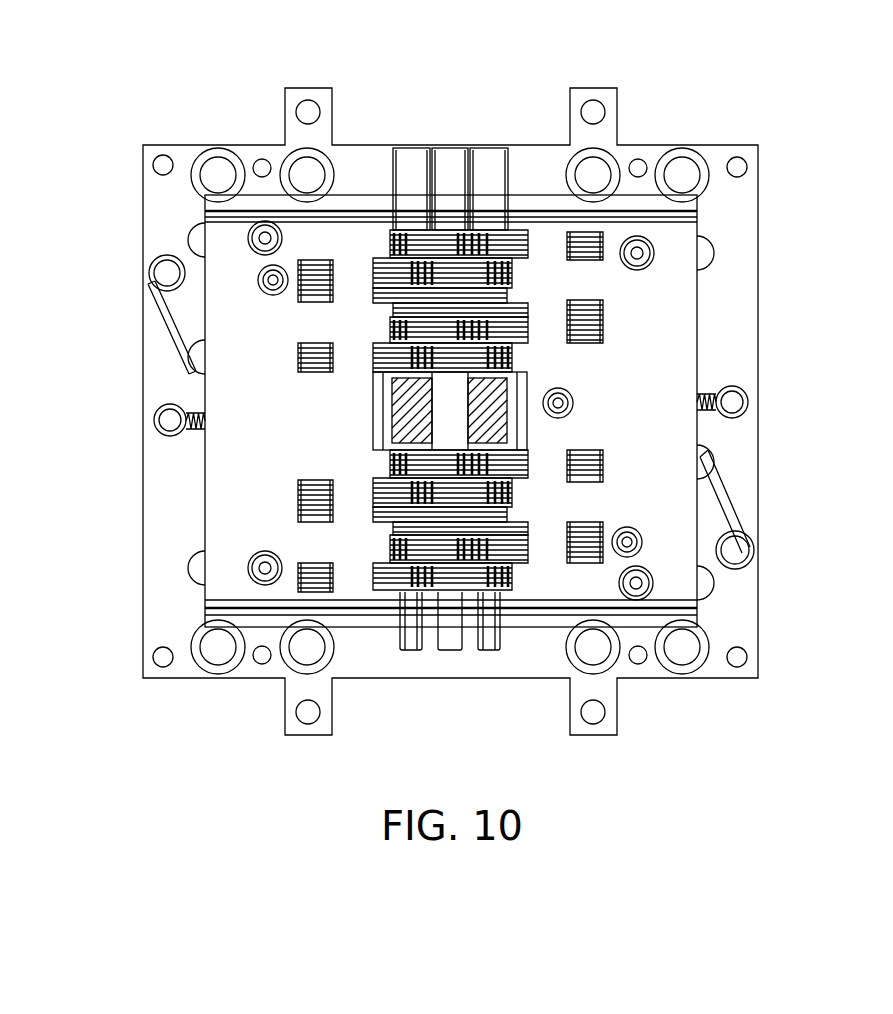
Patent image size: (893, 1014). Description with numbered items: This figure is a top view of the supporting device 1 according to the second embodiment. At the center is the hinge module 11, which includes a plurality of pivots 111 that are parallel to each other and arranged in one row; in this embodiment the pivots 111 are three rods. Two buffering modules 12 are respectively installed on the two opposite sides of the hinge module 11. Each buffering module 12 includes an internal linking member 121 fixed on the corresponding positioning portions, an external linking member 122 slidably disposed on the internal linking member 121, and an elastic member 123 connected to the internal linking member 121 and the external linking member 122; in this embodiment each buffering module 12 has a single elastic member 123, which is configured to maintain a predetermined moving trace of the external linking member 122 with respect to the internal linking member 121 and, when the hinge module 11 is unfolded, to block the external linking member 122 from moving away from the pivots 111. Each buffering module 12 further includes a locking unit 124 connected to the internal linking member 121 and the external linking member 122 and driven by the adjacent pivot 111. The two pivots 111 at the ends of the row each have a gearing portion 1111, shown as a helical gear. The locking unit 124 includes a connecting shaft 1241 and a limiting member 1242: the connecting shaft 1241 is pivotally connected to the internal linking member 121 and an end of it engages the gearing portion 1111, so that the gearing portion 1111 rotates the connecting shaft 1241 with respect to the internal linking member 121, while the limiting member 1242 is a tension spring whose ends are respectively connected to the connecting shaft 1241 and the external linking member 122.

The supporting device 1 is at (757, 47).
The hinge module 11 is at (450, 653).
The pivots 111 is at (490, 160).
The gearing portion 1111 is at (393, 443).
The buffering module 12 is at (703, 678).
The internal linking member 121 is at (220, 247).
The external linking member 122 is at (186, 158).
The elastic member 123 is at (165, 320).
The locking unit 124 is at (70, 378).
The connecting shaft 1241 is at (383, 412).
The limiting member 1242 is at (173, 437).